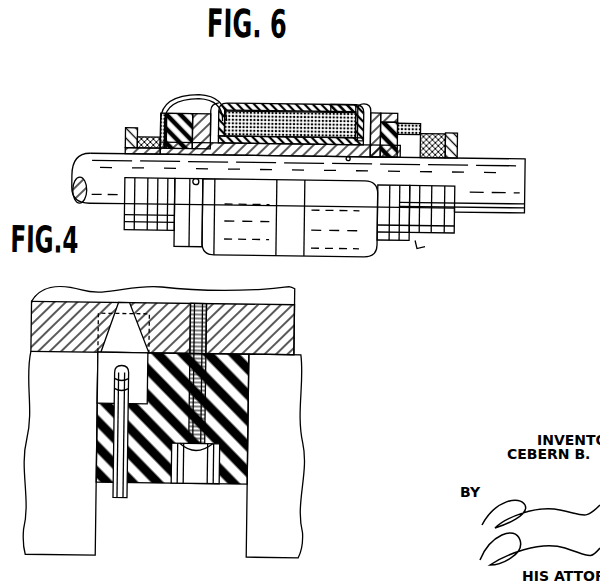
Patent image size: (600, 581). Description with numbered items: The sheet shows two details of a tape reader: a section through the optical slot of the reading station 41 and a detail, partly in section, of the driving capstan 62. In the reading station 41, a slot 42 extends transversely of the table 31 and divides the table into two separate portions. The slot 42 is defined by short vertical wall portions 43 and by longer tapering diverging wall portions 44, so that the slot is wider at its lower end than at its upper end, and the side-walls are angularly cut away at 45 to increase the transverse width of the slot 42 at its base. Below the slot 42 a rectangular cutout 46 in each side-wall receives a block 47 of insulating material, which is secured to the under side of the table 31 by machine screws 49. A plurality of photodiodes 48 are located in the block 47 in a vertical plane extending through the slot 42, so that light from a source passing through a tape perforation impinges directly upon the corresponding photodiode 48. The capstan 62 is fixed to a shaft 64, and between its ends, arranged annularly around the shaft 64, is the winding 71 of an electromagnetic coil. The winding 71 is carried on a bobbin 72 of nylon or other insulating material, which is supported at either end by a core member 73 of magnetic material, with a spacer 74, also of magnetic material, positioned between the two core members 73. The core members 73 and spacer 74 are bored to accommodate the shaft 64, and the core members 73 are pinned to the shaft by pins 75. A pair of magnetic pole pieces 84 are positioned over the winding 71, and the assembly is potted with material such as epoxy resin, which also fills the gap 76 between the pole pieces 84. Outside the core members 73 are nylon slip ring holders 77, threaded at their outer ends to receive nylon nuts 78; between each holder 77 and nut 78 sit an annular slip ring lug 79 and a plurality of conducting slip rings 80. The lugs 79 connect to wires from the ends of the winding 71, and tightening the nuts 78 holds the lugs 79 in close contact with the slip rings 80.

In FIG. 4, the table 31 is at (163, 318).
In FIG. 4, the reading station 41 is at (305, 341).
In FIG. 4, the slot 42 is at (120, 306).
In FIG. 4, the short vertical wall portions 43 is at (126, 306).
In FIG. 4, the tapering diverging wall portions 44 is at (107, 353).
In FIG. 4, the angularly cut away portion 45 is at (124, 333).
In FIG. 4, the rectangular cutout 46 is at (95, 484).
In FIG. 4, the block 47 is at (247, 469).
In FIG. 4, the photodiodes 48 is at (128, 491).
In FIG. 4, the machine screws 49 is at (193, 456).
In FIG. 6, the capstan 62 is at (333, 257).
In FIG. 6, the shaft 64 is at (493, 199).
In FIG. 6, the winding 71 is at (355, 103).
In FIG. 6, the bobbin 72 is at (372, 122).
In FIG. 6, the core member 73 is at (197, 116).
In FIG. 6, the spacer 74 is at (328, 106).
In FIG. 6, the pins 75 is at (199, 186).
In FIG. 6, the gap 76 is at (300, 105).
In FIG. 6, the slip ring holders 77 is at (192, 98).
In FIG. 6, the nylon nuts 78 is at (127, 131).
In FIG. 6, the slip ring lug 79 is at (160, 124).
In FIG. 6, the slip rings 80 is at (150, 139).
In FIG. 6, the magnetic pole pieces 84 is at (251, 104).